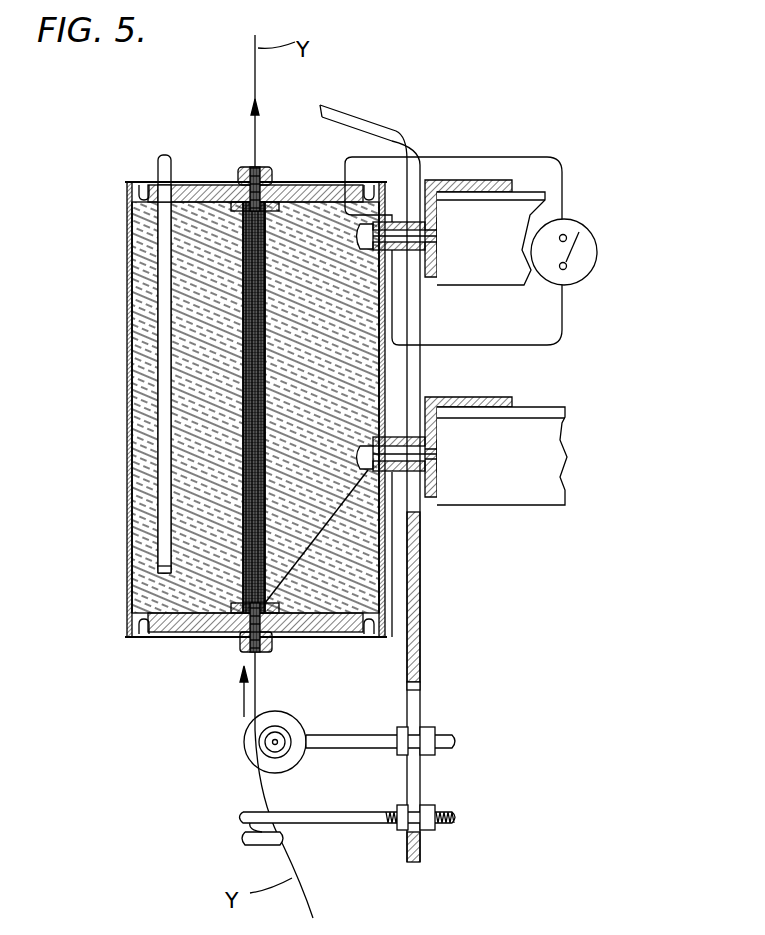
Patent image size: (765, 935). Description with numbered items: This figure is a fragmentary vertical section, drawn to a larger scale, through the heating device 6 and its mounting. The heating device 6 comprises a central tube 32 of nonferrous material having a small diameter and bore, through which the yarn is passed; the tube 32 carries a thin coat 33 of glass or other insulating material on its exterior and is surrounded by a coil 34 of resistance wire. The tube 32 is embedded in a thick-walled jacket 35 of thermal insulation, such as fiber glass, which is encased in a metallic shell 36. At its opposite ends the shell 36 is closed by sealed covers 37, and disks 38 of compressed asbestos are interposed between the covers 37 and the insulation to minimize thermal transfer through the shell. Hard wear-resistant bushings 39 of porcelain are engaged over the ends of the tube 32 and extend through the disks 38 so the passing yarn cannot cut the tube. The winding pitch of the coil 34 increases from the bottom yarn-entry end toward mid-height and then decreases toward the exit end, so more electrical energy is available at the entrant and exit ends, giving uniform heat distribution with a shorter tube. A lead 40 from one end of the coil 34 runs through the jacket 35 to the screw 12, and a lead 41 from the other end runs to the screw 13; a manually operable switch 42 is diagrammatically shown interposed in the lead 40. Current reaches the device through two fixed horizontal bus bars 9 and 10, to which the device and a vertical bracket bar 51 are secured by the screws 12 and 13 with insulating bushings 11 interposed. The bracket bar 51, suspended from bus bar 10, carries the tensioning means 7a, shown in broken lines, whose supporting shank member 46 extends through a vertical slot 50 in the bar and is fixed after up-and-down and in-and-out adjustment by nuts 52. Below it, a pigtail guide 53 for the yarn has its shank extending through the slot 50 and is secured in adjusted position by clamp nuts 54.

The heating device 6 is at (127, 548).
The tensioning or restraining means 7a is at (245, 748).
The bus bar 9 is at (509, 181).
The bus bar 10 is at (492, 397).
The insulating bushings 11 is at (397, 220).
The screw 12 is at (475, 233).
The screw 13 is at (478, 458).
The central tube 32 is at (247, 190).
The coat 33 is at (243, 279).
The coil 34 is at (243, 356).
The jacket 35 is at (143, 230).
The metallic shell 36 is at (128, 458).
The sealed covers 37 is at (155, 182).
The disks 38 is at (303, 185).
The bushings 39 is at (265, 168).
The lead 40 is at (483, 156).
The lead 41 is at (347, 507).
The switch 42 is at (590, 258).
The supporting shank member 46 is at (330, 735).
The vertical slot 50 is at (417, 695).
The bracket bar 51 is at (415, 620).
The nuts 52 is at (433, 728).
The pigtail guide 53 is at (247, 817).
The nuts 54 is at (432, 803).